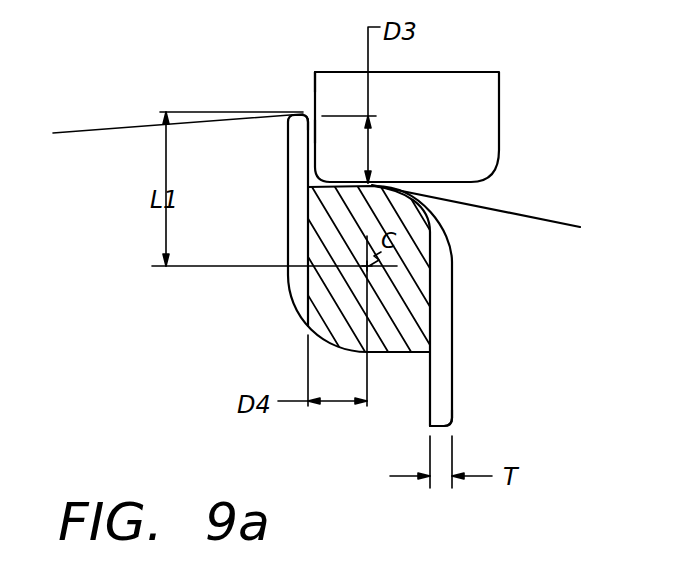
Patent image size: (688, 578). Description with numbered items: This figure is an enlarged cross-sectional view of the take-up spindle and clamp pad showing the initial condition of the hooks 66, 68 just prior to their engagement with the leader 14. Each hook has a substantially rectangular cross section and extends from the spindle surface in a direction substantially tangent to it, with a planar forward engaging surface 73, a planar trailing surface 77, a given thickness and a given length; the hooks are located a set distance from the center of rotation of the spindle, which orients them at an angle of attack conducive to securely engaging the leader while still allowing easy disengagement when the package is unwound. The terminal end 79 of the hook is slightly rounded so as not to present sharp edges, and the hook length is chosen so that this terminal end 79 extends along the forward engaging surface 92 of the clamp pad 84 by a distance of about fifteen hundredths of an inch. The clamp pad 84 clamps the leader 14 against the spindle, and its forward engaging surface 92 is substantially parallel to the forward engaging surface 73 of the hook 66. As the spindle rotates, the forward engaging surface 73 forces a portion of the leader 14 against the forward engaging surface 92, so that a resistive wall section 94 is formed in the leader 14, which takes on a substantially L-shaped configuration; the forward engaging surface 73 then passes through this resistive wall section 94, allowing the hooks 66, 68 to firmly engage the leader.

The leader 14 is at (530, 212).
The hook 66 is at (288, 275).
The hook 68 is at (452, 325).
The forward engaging surface 73 is at (430, 365).
The trailing surface 77 is at (452, 278).
The terminal end 79 is at (305, 112).
The clamp pad 84 is at (499, 108).
The forward engaging surface 92 is at (314, 76).
The resistive wall section 94 is at (316, 143).